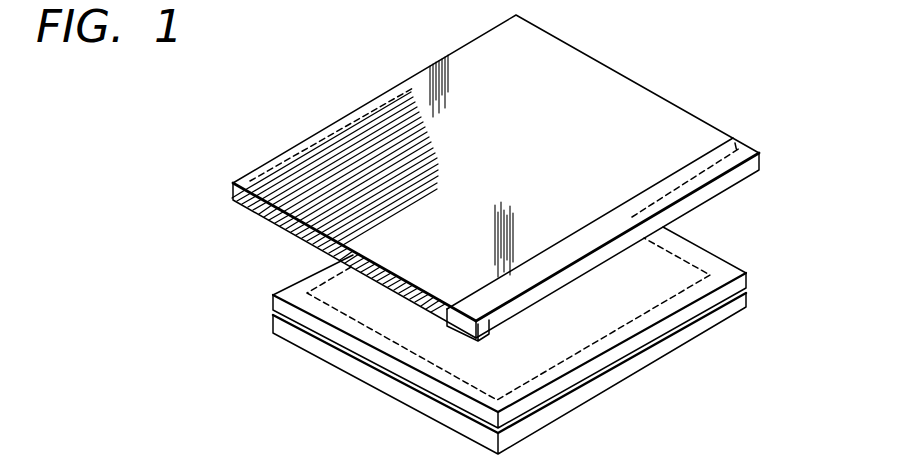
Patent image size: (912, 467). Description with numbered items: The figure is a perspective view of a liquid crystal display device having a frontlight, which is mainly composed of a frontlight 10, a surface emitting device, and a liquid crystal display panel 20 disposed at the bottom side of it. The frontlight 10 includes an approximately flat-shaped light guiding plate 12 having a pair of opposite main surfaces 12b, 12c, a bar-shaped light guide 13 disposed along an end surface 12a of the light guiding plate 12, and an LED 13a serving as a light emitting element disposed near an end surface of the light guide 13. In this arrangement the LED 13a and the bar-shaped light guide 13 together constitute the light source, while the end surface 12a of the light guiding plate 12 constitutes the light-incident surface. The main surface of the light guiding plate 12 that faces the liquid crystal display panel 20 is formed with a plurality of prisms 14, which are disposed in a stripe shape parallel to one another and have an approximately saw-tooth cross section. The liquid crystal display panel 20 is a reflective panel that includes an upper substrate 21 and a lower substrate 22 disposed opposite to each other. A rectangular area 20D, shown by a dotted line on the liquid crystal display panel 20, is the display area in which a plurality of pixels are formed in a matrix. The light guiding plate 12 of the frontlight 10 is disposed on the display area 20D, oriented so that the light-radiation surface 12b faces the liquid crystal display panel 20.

The frontlight 10 is at (671, 97).
The light guiding plate 12 is at (243, 176).
The end surface 12a is at (698, 167).
The main surface (light-radiation surface) 12b is at (250, 207).
The main surface 12c is at (577, 66).
The bar-shaped light guide 13 is at (752, 148).
The LED 13a is at (458, 323).
The prisms 14 is at (320, 150).
The liquid crystal display panel 20 is at (622, 396).
The display area 20D is at (592, 344).
The upper substrate 21 is at (280, 302).
The lower substrate 22 is at (288, 333).